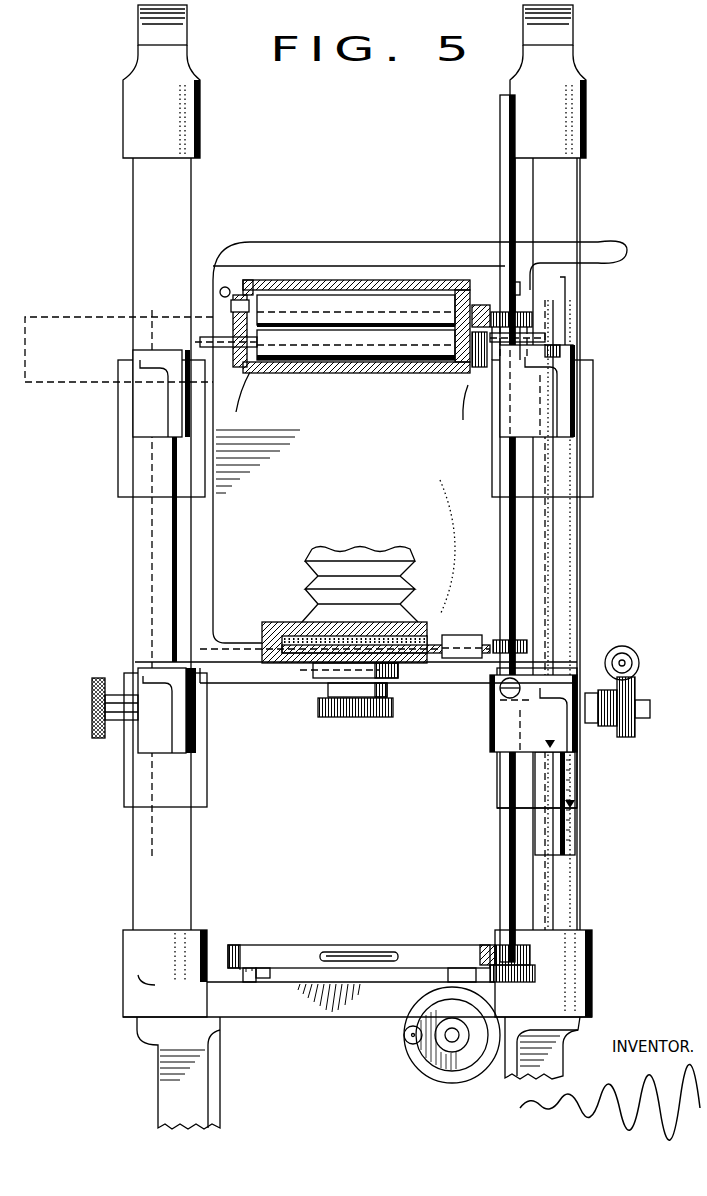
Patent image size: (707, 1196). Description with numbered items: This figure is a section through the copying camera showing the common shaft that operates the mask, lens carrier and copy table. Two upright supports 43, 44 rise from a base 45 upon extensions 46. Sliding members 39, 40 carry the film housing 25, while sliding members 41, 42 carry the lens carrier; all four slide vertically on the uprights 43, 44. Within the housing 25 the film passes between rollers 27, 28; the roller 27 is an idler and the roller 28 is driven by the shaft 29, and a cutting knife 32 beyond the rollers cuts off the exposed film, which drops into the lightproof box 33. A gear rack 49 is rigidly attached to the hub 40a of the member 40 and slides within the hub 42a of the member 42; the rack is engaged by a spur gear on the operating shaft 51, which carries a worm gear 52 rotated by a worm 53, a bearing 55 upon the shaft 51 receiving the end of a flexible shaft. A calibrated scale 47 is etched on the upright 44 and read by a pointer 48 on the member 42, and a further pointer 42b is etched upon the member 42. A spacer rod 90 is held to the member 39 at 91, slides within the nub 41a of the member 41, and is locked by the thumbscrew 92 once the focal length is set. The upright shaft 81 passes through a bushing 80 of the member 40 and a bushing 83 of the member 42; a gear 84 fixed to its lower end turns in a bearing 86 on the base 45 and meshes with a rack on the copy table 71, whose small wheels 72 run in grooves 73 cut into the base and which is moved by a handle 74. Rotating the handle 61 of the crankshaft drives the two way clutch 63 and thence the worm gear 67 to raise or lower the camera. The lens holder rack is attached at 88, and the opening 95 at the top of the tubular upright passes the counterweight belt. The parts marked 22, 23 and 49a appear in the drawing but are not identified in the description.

The gear bearing 22 is at (478, 366).
The pinion 23 is at (532, 323).
The housing 25 is at (490, 308).
The roller 27 is at (440, 300).
The roller 28 is at (340, 353).
The shaft 29 is at (247, 366).
The cutting knife 32 is at (348, 243).
The lightproof box 33 is at (458, 636).
The sliding member 39 is at (122, 424).
The sliding member 40 is at (590, 444).
The hub 40a is at (575, 398).
The sliding member 41 is at (126, 668).
The nub 41a is at (148, 748).
The sliding member 42 is at (590, 779).
The hub 42a is at (580, 749).
The pointer 42b is at (547, 748).
The upright support 43 is at (162, 544).
The upright support 44 is at (565, 296).
The base 45 is at (336, 997).
The extensions 46 is at (613, 955).
The calibrated scale 47 is at (580, 567).
The pointer 48 is at (580, 807).
The gear rack 49 is at (555, 522).
The rod 49a is at (548, 544).
The operating shaft 51 is at (652, 713).
The worm gear 52 is at (635, 699).
The worm 53 is at (638, 654).
The bearing 55 is at (640, 664).
The handle 61 is at (403, 1034).
The two way clutch 63 is at (462, 646).
The worm gear 67 is at (490, 655).
The copy table 71 is at (310, 945).
The small wheels 72 is at (259, 980).
The grooves 73 is at (243, 984).
The handle 74 is at (362, 952).
The bushing 80 is at (520, 339).
The upright shaft 81 is at (503, 189).
The bushing 83 is at (528, 643).
The third gear 84 is at (518, 945).
The bearing 86 is at (532, 969).
The attachment point 88 is at (485, 945).
The spacer rod 90 is at (135, 559).
The attachment point 91 is at (140, 392).
The thumbscrew 92 is at (92, 701).
The center opening 95 is at (190, 137).